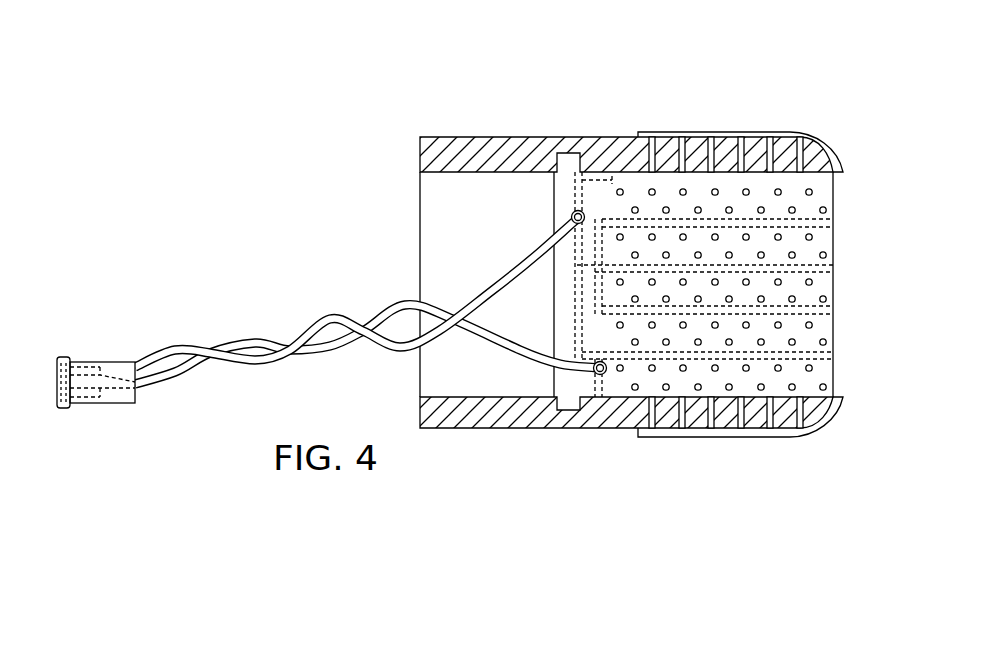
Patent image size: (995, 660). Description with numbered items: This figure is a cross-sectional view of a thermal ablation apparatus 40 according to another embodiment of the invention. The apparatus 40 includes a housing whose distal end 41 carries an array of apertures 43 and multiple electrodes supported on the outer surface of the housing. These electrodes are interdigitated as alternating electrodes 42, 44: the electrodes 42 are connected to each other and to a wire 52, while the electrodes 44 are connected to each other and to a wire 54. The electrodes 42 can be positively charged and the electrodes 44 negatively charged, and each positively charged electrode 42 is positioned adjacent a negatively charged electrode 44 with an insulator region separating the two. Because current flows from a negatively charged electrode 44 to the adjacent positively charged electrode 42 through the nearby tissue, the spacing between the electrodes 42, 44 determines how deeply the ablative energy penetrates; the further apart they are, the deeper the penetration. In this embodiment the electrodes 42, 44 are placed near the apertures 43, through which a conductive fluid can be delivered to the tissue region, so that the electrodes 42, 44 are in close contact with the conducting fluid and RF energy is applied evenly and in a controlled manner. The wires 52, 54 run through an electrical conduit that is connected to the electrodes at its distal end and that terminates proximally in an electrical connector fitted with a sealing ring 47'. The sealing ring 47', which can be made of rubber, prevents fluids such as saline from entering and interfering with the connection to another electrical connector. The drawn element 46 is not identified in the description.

The thermal ablation apparatus 40 is at (816, 54).
The distal end 41 is at (833, 292).
The electrodes 42 is at (833, 312).
The electrodes 44 is at (833, 357).
The apertures 43 is at (813, 371).
The support rib 46 is at (743, 335).
The wire 54 is at (500, 266).
The wire 52 is at (526, 350).
The sealing ring 47' is at (52, 399).